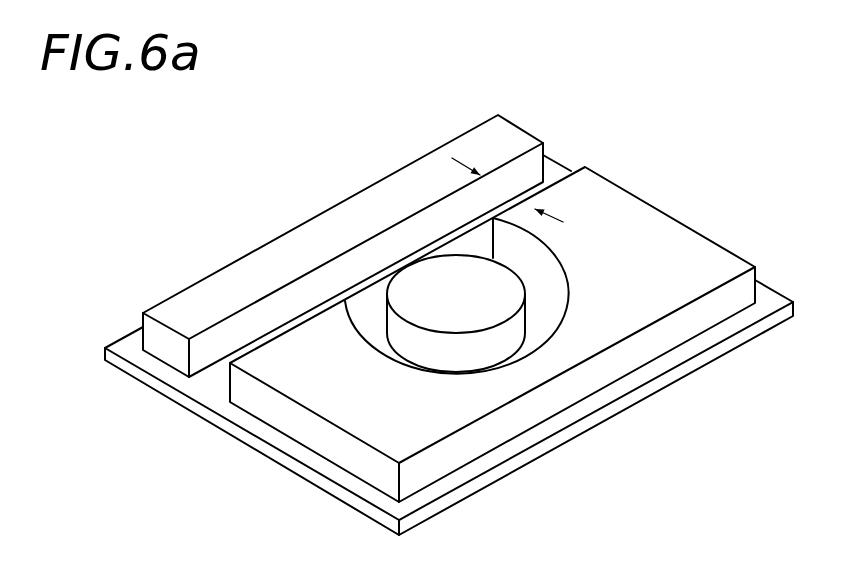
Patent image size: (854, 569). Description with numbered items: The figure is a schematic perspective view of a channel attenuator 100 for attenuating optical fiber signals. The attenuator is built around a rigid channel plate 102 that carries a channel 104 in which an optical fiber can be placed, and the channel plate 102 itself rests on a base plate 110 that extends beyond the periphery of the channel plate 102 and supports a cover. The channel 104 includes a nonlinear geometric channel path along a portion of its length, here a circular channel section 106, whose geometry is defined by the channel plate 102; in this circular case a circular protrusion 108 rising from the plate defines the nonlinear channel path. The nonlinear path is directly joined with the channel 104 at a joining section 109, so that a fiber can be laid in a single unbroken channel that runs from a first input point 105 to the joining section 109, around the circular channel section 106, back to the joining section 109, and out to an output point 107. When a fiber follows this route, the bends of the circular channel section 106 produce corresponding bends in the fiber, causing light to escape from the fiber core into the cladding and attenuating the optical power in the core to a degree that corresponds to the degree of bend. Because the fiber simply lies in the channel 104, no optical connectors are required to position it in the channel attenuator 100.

The channel attenuator 100 is at (718, 197).
The channel plate 102 is at (640, 265).
The channel 104 is at (263, 320).
The first input point 105 is at (208, 383).
The circular channel section 106 is at (368, 315).
The output point 107 is at (567, 157).
The circular protrusion 108 is at (475, 303).
The joining section 109 is at (402, 243).
The base plate 110 is at (438, 491).